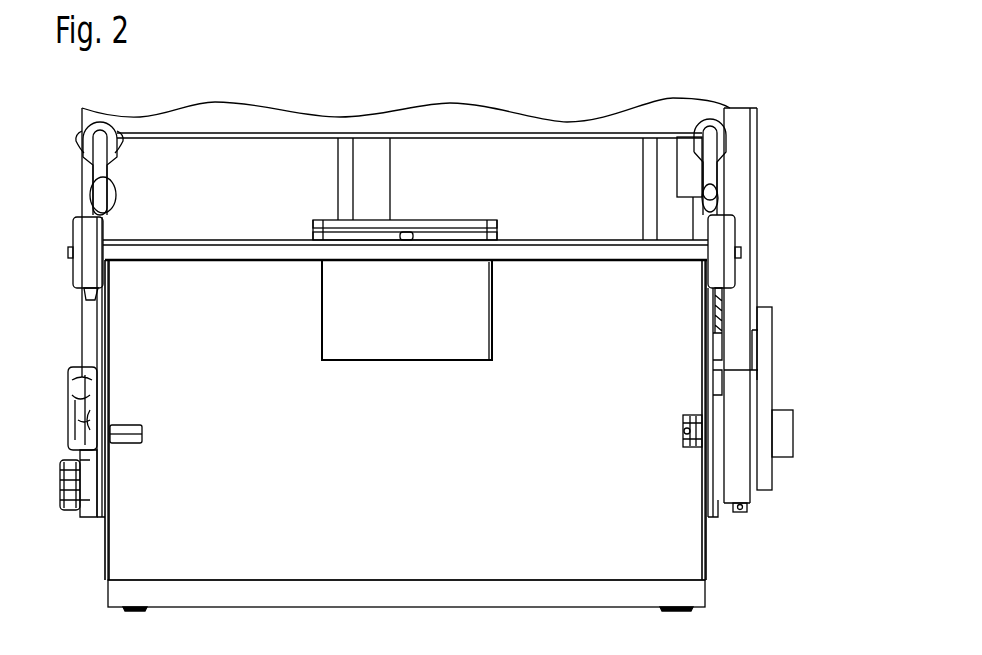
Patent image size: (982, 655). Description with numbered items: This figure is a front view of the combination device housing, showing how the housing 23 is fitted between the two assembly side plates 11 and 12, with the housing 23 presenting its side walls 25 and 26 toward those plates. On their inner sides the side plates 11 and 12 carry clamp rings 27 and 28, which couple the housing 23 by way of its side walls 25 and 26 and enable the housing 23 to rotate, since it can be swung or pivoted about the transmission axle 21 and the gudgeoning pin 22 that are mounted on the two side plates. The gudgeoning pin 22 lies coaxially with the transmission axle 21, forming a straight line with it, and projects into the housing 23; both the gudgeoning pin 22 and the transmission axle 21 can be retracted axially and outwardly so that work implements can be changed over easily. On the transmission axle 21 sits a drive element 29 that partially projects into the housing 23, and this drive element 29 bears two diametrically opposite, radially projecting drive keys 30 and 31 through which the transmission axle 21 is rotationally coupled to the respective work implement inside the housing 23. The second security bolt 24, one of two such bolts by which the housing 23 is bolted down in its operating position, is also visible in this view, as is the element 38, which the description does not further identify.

The frame post 11 is at (720, 307).
The latch assembly 12 is at (100, 340).
The roller 21 is at (786, 448).
The handle 22 is at (136, 428).
The container body 23 is at (578, 570).
The knob 24 is at (65, 505).
The side wall 25 is at (708, 545).
The base rail 26 is at (104, 576).
The mounting strip 27 is at (702, 377).
The side plate 28 is at (110, 380).
The bolt 29 is at (684, 432).
The nut 30 is at (686, 447).
The washer 31 is at (683, 417).
The crank handle 38 is at (790, 413).